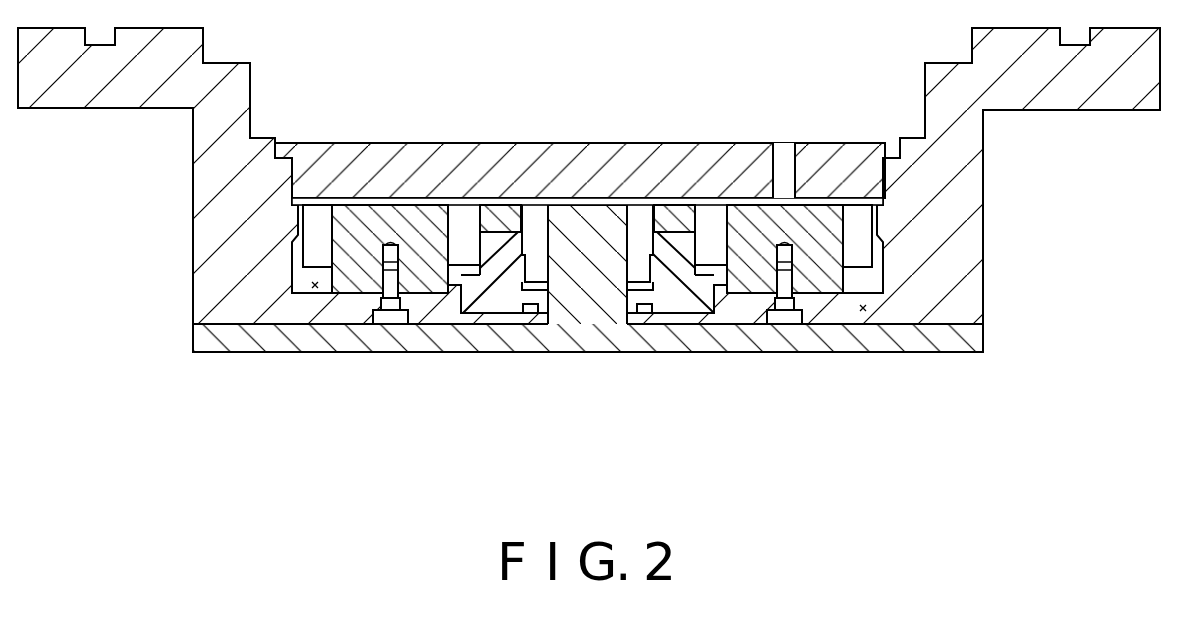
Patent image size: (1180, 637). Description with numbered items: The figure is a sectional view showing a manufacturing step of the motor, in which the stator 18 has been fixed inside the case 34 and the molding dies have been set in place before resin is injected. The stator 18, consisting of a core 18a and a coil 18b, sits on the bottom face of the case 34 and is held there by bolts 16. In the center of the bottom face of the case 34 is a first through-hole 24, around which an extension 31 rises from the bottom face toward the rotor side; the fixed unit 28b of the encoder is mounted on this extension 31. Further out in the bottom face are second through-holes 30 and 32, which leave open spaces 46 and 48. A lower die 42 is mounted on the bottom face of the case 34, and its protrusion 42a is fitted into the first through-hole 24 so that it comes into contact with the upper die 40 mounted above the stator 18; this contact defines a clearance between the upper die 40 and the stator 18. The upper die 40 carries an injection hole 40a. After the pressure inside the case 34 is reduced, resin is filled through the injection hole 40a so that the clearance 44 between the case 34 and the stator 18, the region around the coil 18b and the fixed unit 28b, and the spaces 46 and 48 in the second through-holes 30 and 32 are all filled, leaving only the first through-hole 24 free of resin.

The bolts 16 is at (387, 318).
The stator 18 is at (391, 325).
The core 18a is at (413, 283).
The coil 18b is at (458, 255).
The first through-hole 24 is at (550, 294).
The fixed unit 28b is at (637, 273).
The second through-hole 30 is at (678, 262).
The extension 31 is at (700, 262).
The second through-hole 32 is at (874, 300).
The case 34 is at (965, 235).
The upper die 40 is at (580, 125).
The injection hole 40a is at (790, 170).
The lower die 42 is at (588, 305).
The protrusion 42a is at (593, 246).
The clearance 44 is at (315, 288).
The space 46 is at (660, 289).
The space 48 is at (864, 311).